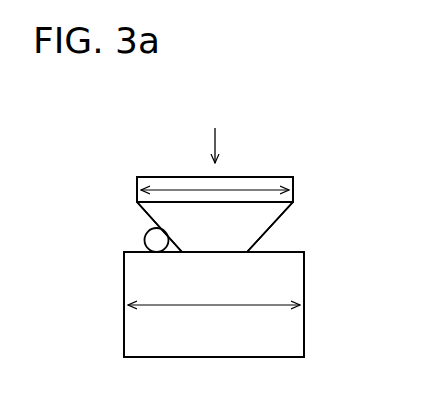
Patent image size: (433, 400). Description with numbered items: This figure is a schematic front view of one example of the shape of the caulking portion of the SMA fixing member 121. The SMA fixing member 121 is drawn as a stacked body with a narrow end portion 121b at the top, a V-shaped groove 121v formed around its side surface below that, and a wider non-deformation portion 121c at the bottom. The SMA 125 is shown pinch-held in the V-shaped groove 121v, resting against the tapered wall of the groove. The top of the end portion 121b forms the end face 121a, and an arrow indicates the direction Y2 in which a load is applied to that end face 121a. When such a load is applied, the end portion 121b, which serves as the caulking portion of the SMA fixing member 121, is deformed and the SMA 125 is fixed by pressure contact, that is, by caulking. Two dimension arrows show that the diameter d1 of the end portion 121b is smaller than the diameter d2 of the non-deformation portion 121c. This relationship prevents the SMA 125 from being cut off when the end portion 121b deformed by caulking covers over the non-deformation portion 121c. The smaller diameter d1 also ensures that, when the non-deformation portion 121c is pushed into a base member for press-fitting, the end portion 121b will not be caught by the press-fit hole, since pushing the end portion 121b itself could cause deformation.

The SMA fixing member 121 is at (219, 81).
The end face 121a is at (263, 178).
The end portion 121b is at (294, 182).
The V-shaped groove 121v is at (138, 213).
The non-deformation portion 121c is at (124, 272).
The SMA 125 is at (145, 239).
The diameter of the end portion d1 is at (170, 190).
The diameter of the non-deformation portion d2 is at (170, 307).
The direction Y2 is at (233, 145).